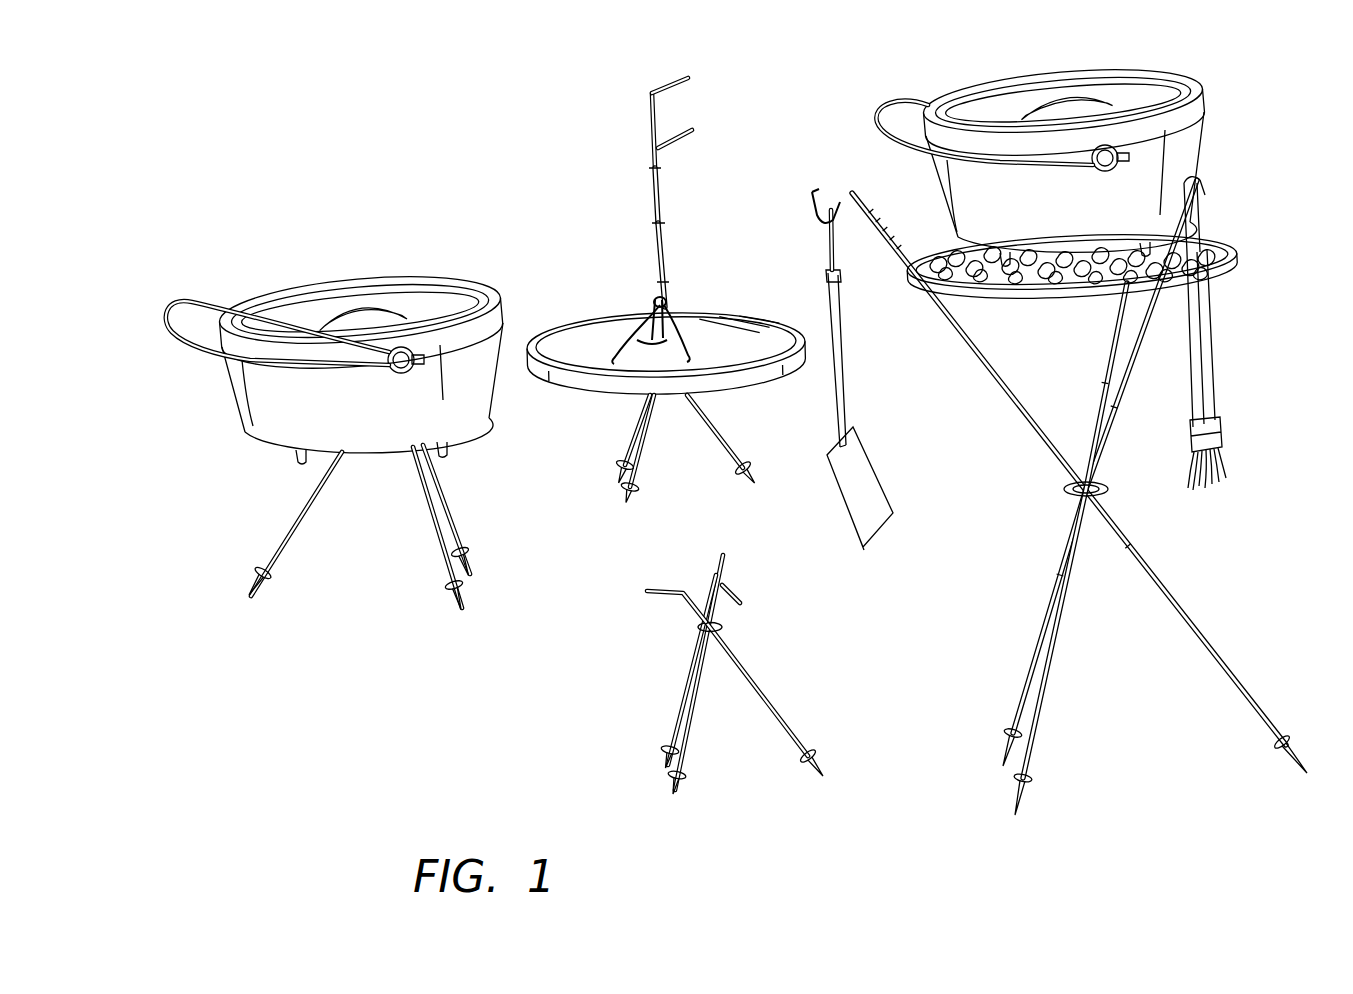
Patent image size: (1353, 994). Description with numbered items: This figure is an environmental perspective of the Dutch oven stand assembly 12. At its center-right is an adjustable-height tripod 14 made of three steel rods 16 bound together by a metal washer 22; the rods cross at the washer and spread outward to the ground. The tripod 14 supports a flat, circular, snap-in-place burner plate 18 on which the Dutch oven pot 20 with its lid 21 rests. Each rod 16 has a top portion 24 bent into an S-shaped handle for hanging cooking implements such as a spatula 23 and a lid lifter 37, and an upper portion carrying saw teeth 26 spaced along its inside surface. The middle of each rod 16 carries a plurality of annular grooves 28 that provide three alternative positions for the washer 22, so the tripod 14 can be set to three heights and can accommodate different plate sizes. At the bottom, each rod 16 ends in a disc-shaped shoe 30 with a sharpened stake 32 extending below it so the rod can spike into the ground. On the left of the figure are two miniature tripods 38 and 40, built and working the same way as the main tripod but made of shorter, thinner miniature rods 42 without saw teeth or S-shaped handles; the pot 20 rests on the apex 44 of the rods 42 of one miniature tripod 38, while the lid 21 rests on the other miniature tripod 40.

The Dutch oven stand assembly 12 is at (738, 424).
The adjustable-height tripod 14 is at (1078, 500).
The steel rod 16 is at (1078, 482).
The burner plate 18 is at (1240, 260).
The Dutch oven pot 20 is at (490, 400).
The lid 21 is at (1137, 105).
The metal washer 22 is at (1110, 487).
The spatula 23 is at (873, 480).
The top portion 24 is at (850, 337).
The saw teeth 26 is at (917, 220).
The annular grooves 28 is at (1030, 417).
The disc-shaped shoe 30 is at (1037, 775).
The sharpened stake 32 is at (1013, 817).
The lid lifter 37 is at (658, 223).
The miniature tripod 38 is at (538, 505).
The miniature tripod 40 is at (661, 467).
The miniature rods 42 is at (541, 594).
The apex 44 is at (668, 590).